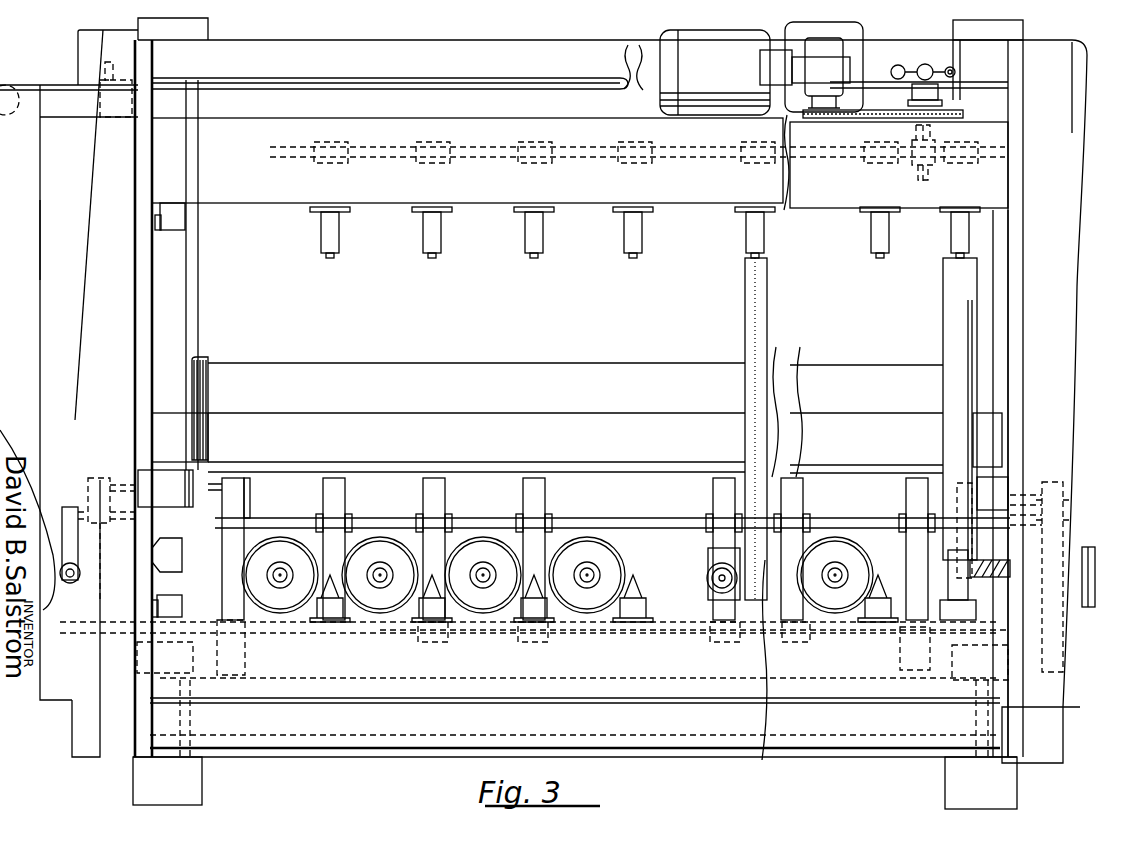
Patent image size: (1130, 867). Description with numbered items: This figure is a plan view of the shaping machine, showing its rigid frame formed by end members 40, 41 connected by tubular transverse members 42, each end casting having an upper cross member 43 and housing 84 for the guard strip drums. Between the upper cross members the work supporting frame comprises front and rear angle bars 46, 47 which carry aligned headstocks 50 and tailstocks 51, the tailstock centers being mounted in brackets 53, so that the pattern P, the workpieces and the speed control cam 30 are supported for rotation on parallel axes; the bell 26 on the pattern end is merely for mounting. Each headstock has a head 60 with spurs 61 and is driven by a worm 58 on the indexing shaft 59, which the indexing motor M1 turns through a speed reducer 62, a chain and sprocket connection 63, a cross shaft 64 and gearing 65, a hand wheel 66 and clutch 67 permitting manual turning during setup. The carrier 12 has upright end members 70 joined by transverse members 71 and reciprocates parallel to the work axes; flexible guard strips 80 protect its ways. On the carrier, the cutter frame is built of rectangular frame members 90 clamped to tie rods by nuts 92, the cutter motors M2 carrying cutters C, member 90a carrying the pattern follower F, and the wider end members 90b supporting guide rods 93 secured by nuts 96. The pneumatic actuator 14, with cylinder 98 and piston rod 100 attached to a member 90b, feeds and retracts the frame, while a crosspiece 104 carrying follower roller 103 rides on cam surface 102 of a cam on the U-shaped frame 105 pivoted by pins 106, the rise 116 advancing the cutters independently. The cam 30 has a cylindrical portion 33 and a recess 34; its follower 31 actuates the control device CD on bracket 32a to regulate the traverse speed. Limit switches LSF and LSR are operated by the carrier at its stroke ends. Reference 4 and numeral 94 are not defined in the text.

The section line 4 is at (0, 82).
The carrier 12 is at (508, 402).
The pneumatically operated actuator 14 is at (1087, 542).
The bell 26 is at (778, 563).
The speed control cam 30 is at (937, 337).
The follower 31 is at (958, 610).
The bracket 32a is at (1005, 548).
The uniformly cylindrical portion 33 is at (943, 308).
The recess 34 is at (943, 425).
The end member 40 is at (88, 170).
The end member 41 is at (1068, 172).
The tubular transverse members 42 is at (628, 47).
The upper cross member 43 is at (86, 288).
The front angle bar 46 is at (472, 700).
The rear angle bar 47 is at (495, 122).
The headstock 50 is at (311, 222).
The tailstock 51 is at (302, 604).
The bracket 53 is at (612, 618).
The worm 58 is at (320, 165).
The indexing shaft 59 is at (800, 150).
The head 60 is at (322, 244).
The spurs 61 is at (330, 258).
The speed reducer 62 is at (840, 42).
The chain and sprocket connection 63 is at (858, 118).
The cross shaft 64 is at (918, 135).
The gearing 65 is at (906, 175).
The hand wheel 66 is at (958, 60).
The clutch 67 is at (904, 87).
The upright end members 70 is at (1010, 480).
The transverse members 71 is at (432, 413).
The guard apron strips 80 is at (188, 310).
The housing 84 is at (210, 24).
The rectangular frame members 90 is at (436, 506).
The follower supporting frame member 90a is at (728, 506).
The frame members 90b is at (246, 508).
The clamping nuts 92 is at (340, 505).
The guide rods 93 is at (208, 478).
The small roller 94 is at (707, 570).
The nuts 96 is at (246, 492).
The cylinder 98 is at (1082, 600).
The piston rod 100 is at (946, 568).
The cam surface 102 is at (42, 240).
The follower roller 103 is at (82, 574).
The crosspiece 104 is at (70, 507).
The U-shaped frame 105 is at (32, 84).
The pins 106 is at (112, 96).
The rise 116 is at (62, 540).
The cutters C is at (262, 562).
The control device CD is at (960, 546).
The pattern follower F is at (708, 580).
The limit switch LSF is at (186, 220).
The limit switch LSR is at (182, 606).
The indexing motor M1 is at (680, 33).
The cutter driving motors M2 is at (606, 558).
The pattern P is at (745, 316).